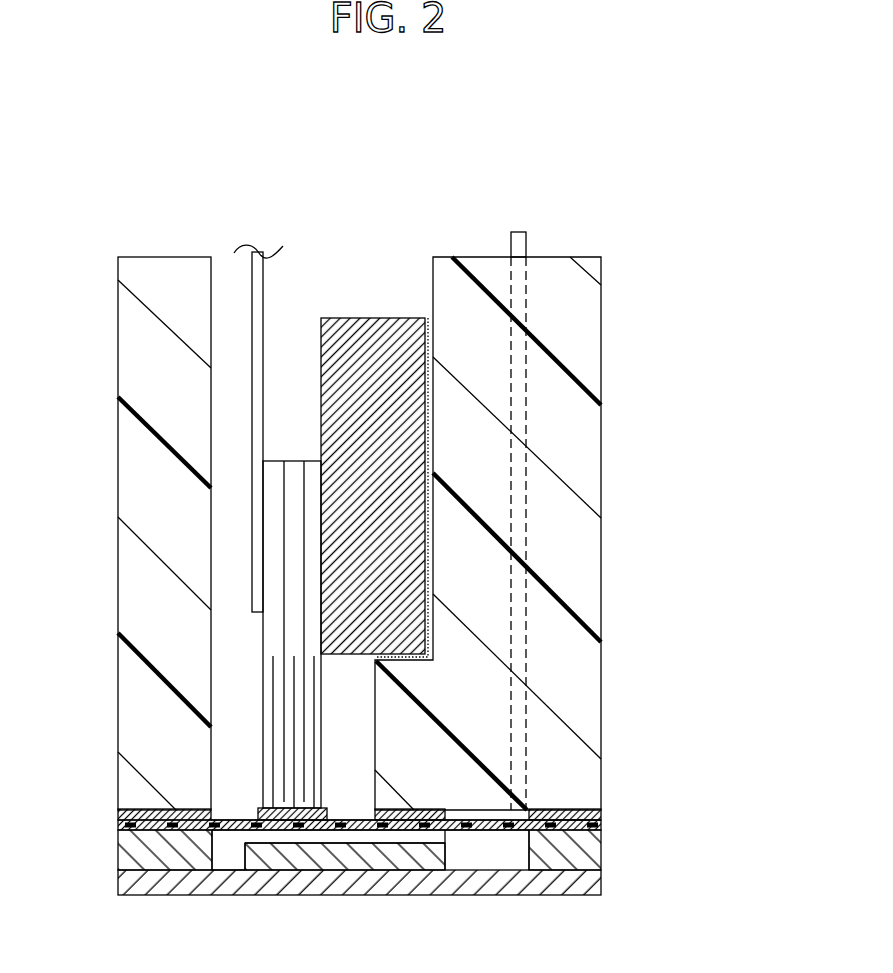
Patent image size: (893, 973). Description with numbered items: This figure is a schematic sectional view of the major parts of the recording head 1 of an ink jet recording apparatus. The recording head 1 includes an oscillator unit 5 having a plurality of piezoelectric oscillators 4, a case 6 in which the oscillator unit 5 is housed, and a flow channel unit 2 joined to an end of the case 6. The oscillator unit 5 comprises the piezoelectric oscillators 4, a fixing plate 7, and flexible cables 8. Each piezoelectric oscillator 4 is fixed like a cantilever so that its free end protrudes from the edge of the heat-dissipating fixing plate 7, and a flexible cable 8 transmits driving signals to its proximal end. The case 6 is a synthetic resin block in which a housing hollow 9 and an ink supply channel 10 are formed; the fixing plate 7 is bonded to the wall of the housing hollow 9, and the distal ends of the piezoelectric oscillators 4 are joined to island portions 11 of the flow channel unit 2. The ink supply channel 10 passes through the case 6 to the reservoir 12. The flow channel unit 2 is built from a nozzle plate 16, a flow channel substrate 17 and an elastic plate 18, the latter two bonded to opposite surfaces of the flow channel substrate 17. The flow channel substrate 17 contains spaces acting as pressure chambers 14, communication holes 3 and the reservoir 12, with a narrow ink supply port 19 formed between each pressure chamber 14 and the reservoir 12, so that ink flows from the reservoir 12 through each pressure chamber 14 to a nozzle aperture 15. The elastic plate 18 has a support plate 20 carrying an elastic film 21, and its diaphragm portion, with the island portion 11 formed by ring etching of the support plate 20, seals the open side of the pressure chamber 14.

The recording head 1 is at (365, 170).
The flow channel unit 2 is at (712, 787).
The communication hole 3 is at (226, 853).
The piezoelectric oscillator 4 is at (262, 674).
The oscillator unit 5 is at (301, 288).
The case 6 is at (583, 307).
The fixing plate 7 is at (372, 345).
The flexible cable 8 is at (255, 390).
The housing hollow 9 is at (228, 523).
The ink supply channel 10 is at (517, 474).
The island portion 11 is at (338, 808).
The reservoir 12 is at (487, 860).
The pressure chamber 14 is at (332, 835).
The nozzle aperture 15 is at (222, 882).
The nozzle plate 16 is at (598, 880).
The flow channel substrate 17 is at (598, 845).
The elastic plate 18 is at (667, 790).
The ink supply port 19 is at (413, 833).
The support plate 20 is at (598, 815).
The elastic film 21 is at (598, 826).